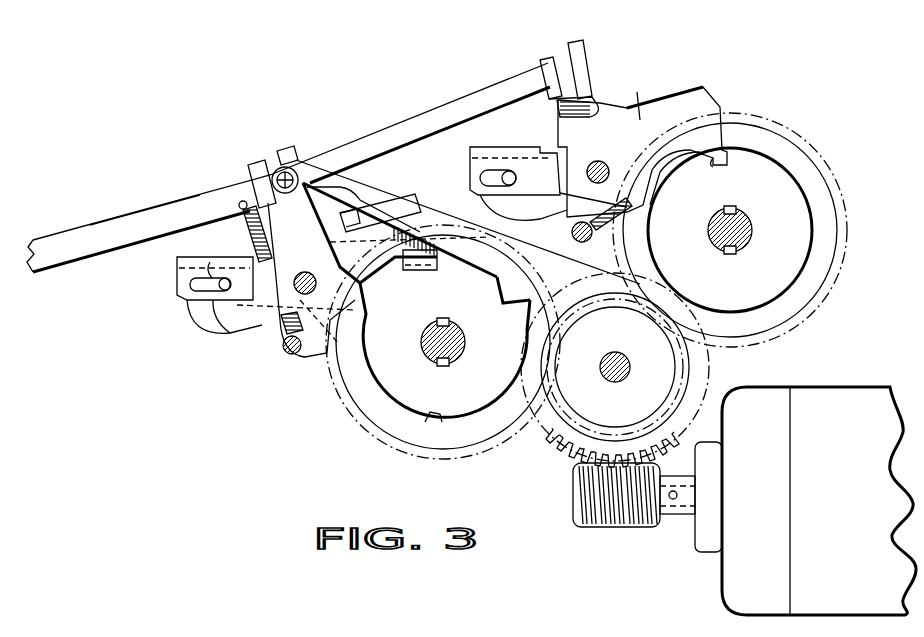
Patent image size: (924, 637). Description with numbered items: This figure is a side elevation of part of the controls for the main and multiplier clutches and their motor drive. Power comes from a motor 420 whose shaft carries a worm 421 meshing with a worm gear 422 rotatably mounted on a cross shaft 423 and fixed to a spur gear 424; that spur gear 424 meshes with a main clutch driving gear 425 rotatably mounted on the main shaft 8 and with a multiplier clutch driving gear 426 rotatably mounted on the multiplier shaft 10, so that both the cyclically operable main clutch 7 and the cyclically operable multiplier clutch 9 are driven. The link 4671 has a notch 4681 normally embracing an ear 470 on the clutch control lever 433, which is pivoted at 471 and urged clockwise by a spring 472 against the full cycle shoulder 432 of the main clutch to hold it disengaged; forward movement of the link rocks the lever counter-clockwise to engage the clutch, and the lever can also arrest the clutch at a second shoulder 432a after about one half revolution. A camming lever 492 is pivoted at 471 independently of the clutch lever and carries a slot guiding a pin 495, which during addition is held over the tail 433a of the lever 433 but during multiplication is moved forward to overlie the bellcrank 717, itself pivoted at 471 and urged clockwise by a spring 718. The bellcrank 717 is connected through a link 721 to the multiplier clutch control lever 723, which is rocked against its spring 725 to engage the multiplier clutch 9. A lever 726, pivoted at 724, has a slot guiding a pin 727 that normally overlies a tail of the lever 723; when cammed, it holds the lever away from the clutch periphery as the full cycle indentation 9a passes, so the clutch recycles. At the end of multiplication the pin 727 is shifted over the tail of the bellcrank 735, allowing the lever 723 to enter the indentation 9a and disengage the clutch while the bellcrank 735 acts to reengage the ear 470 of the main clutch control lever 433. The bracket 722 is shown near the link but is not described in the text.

The link 4671 is at (136, 208).
The ear 470 is at (262, 186).
The notch 4681 is at (318, 168).
The link 721 is at (484, 103).
The clip 722 is at (588, 86).
The multiplier clutch control lever 723 is at (725, 116).
The lever 726 is at (494, 140).
The pin 727 is at (512, 170).
The pivot 724 is at (601, 170).
The clutch control lever 433 is at (420, 196).
The bellcrank 735 is at (484, 208).
The spring 725 is at (572, 233).
The full cycle indentation 9a is at (715, 166).
The multiplier shaft 10 is at (754, 233).
The multiplier clutch 9 is at (815, 243).
The multiplier clutch driving gear 426 is at (810, 316).
The pivot 471 is at (306, 272).
The pin 495 is at (212, 262).
The camming lever 492 is at (177, 276).
The bellcrank 717 is at (206, 319).
The tail 433a is at (213, 322).
The spring 472 is at (287, 358).
The spring 718 is at (347, 341).
The full cycle shoulder 432 is at (417, 276).
The main shaft 8 is at (435, 354).
The second shoulder 432a is at (447, 420).
The main clutch 7 is at (398, 428).
The main clutch driving gear 425 is at (471, 447).
The cross shaft 423 is at (626, 373).
The spur gear 424 is at (660, 402).
The worm gear 422 is at (590, 456).
The worm 421 is at (596, 528).
The motor 420 is at (835, 393).